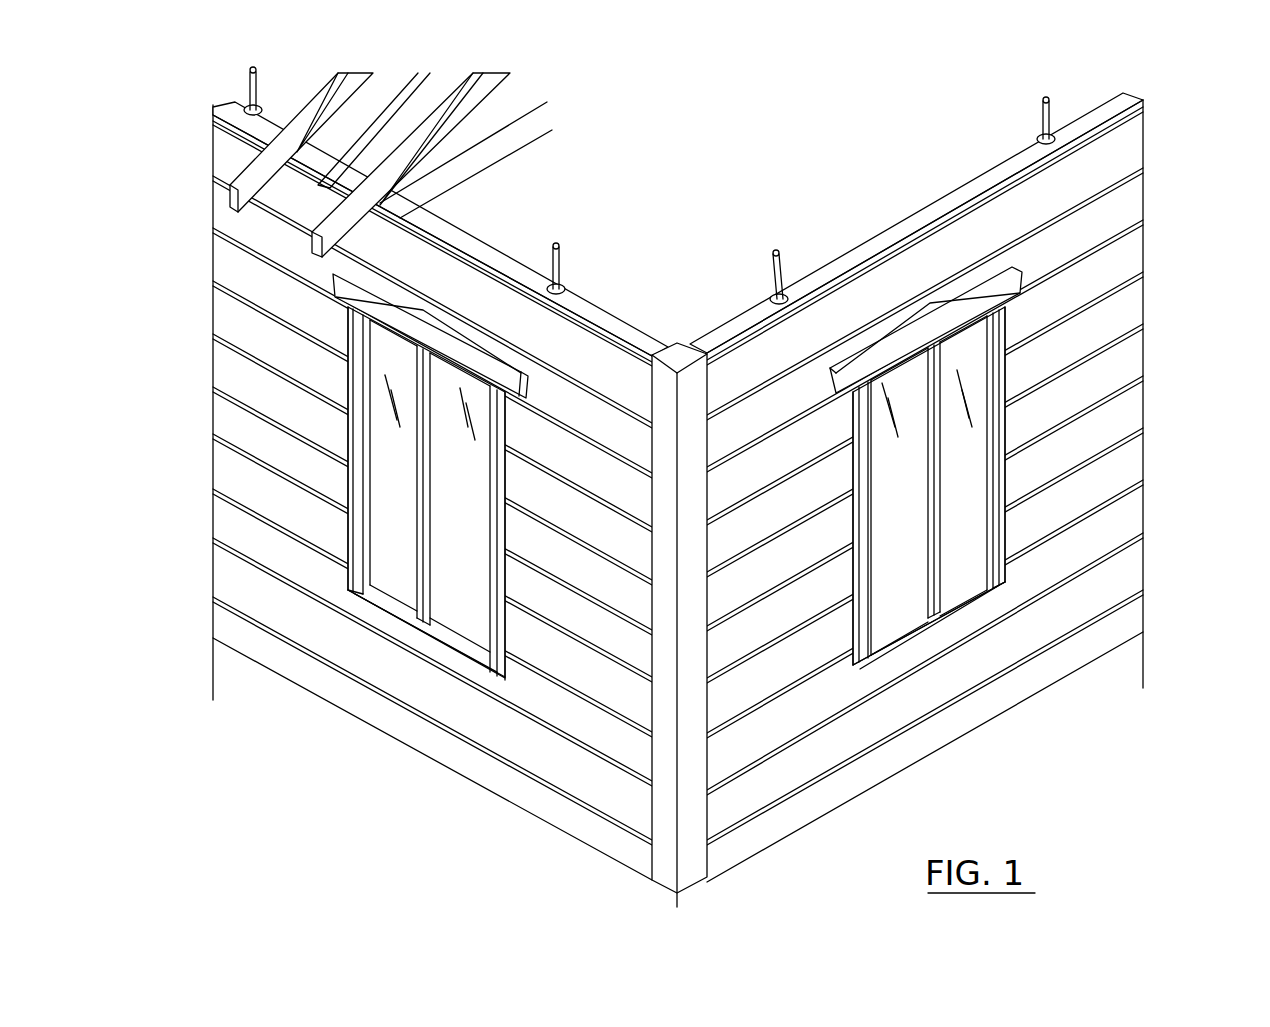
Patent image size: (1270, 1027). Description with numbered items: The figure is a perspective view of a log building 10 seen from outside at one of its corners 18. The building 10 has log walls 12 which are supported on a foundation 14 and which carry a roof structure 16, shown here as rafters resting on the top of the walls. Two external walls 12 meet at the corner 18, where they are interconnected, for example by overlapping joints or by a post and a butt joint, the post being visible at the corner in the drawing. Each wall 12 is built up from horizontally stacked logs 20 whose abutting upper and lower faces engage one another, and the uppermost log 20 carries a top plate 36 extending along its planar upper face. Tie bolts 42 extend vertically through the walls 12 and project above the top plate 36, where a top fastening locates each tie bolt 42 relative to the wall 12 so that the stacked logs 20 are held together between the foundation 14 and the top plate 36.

The log building 10 is at (368, 762).
The log walls 12 is at (206, 457).
The foundation 14 is at (470, 768).
The roof structure 16 is at (497, 148).
The corners 18 is at (678, 843).
The logs 20 is at (230, 574).
The top plate 36 is at (743, 320).
The tie bolt 42 is at (252, 78).